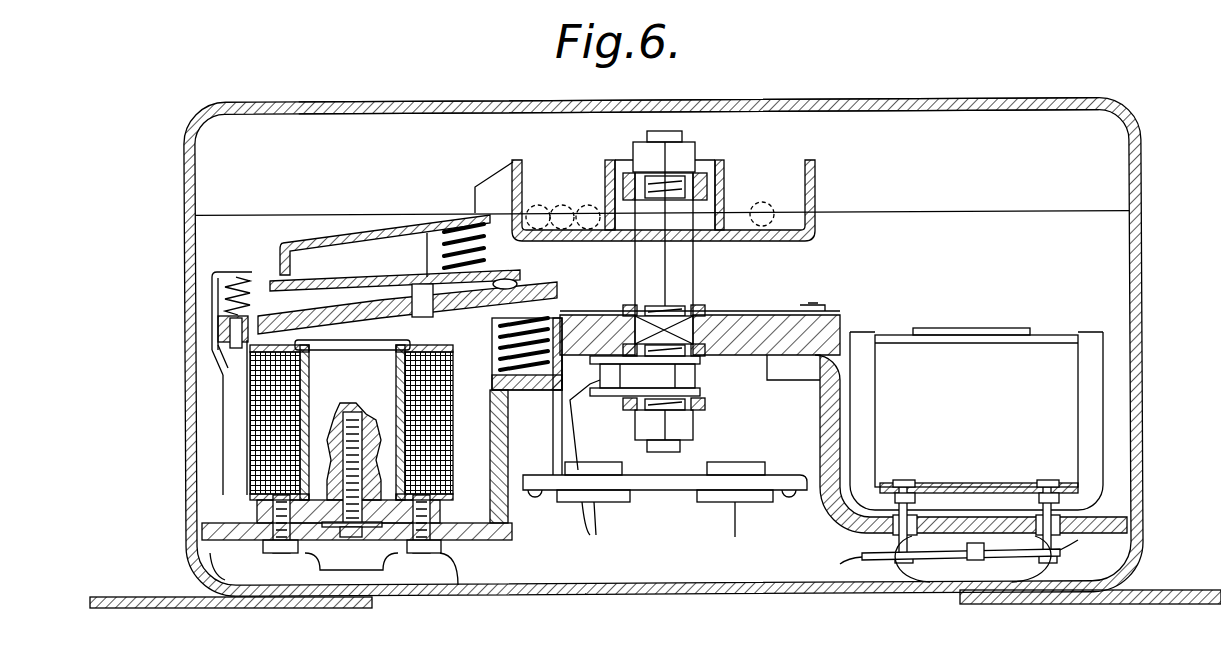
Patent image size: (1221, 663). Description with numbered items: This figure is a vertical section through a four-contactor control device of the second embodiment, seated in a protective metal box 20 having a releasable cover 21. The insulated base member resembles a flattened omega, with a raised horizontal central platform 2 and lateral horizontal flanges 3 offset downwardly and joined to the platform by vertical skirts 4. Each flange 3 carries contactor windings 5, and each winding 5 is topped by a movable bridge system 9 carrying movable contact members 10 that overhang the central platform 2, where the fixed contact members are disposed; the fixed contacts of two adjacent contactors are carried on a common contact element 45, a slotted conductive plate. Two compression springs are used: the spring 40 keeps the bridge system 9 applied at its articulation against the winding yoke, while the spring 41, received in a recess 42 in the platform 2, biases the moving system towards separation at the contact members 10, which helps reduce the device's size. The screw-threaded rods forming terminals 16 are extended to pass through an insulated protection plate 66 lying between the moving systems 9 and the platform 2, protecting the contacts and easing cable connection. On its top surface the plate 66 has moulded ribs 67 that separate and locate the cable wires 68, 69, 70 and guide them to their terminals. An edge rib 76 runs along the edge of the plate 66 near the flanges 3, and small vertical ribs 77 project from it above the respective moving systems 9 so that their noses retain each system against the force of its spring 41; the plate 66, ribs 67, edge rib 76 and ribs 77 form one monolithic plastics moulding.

The central platform 2 is at (733, 346).
The flange 3 is at (230, 526).
The skirt 4 is at (500, 442).
The contactor winding 5 is at (258, 425).
The movable bridge system 9 is at (333, 227).
The movable contact member 10 is at (511, 283).
The terminal 16 is at (668, 133).
The protective metal box 20 is at (1136, 293).
The releasable cover 21 is at (843, 104).
The compression spring 40 is at (244, 284).
The compression spring 41 is at (530, 388).
The recess 42 is at (543, 370).
The common contact element 45 is at (730, 317).
The insulated protection plate 66 is at (773, 246).
The rib 67 is at (610, 161).
The wire 68 is at (588, 208).
The wire 69 is at (562, 208).
The wire 70 is at (538, 208).
The edge rib 76 is at (513, 162).
The vertical rib 77 is at (487, 199).